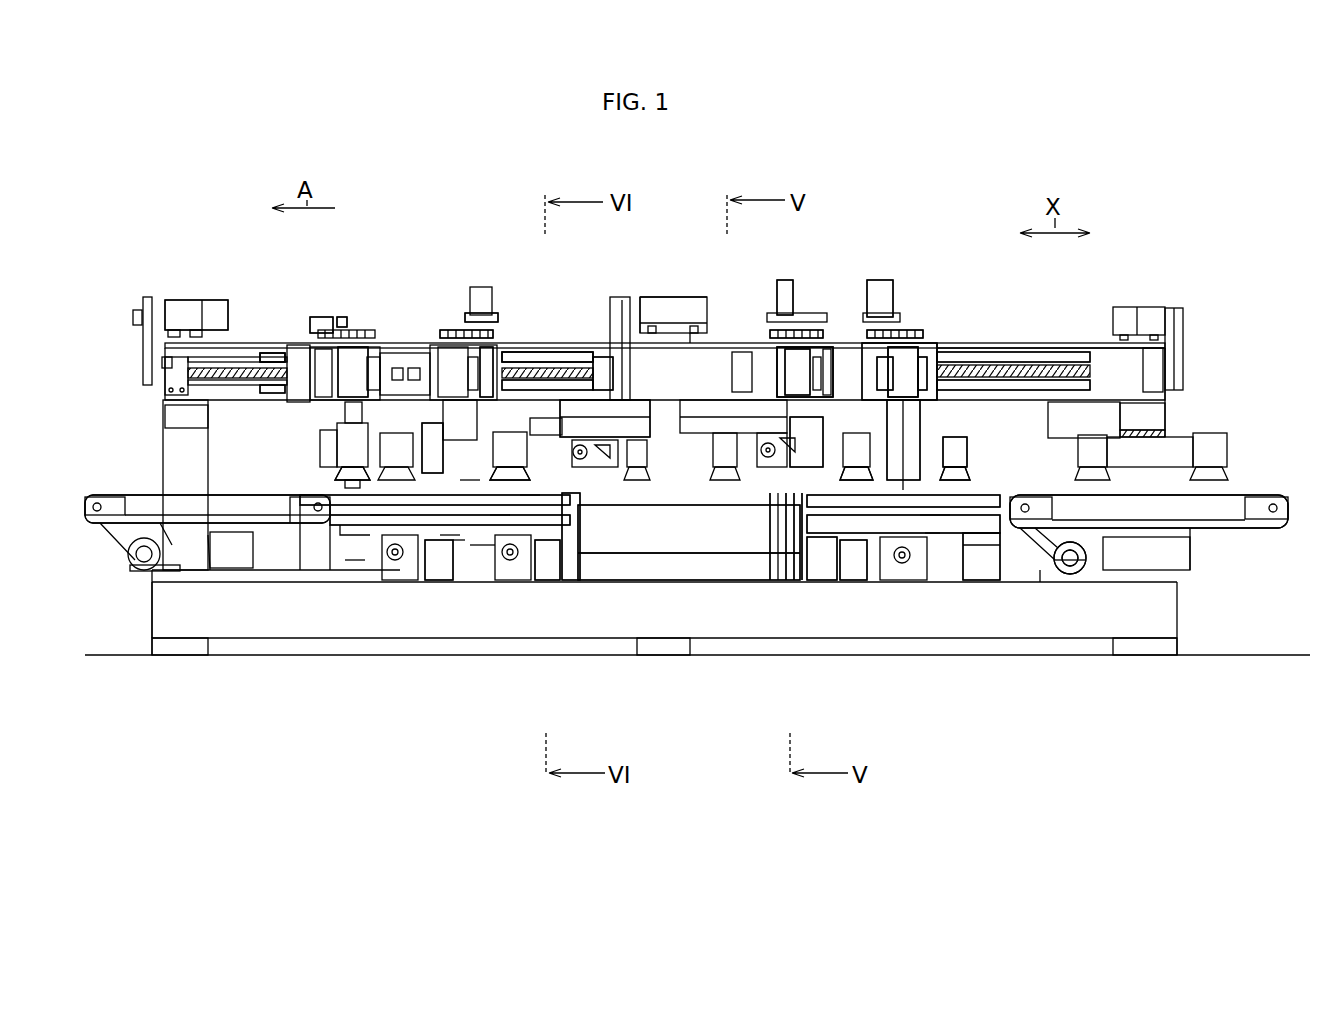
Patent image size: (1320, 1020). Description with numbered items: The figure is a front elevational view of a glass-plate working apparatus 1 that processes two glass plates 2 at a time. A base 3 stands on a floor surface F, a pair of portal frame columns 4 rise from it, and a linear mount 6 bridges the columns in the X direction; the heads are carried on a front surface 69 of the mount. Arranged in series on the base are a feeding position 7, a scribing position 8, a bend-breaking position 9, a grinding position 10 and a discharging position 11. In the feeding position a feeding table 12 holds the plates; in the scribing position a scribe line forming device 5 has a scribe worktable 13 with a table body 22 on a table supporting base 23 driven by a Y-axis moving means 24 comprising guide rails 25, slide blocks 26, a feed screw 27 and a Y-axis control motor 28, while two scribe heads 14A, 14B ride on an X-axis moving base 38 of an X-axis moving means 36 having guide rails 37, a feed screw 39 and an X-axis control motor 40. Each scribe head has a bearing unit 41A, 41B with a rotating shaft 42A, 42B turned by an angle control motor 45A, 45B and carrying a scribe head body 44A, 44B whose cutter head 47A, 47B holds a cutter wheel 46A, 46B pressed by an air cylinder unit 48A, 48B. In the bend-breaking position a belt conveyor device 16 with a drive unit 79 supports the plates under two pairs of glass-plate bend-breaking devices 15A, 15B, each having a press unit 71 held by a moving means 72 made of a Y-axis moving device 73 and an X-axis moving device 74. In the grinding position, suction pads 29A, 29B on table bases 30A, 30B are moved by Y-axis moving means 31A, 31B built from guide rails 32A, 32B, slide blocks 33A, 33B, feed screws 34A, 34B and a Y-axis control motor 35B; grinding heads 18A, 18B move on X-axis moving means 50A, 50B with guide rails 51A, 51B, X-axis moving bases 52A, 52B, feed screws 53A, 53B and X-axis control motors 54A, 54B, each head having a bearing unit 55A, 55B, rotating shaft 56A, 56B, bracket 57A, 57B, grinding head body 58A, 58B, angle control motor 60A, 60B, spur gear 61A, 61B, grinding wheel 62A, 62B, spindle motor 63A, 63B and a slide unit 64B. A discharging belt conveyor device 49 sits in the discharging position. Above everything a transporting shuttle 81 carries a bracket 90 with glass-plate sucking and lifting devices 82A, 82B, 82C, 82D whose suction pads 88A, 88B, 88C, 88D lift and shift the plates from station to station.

The glass-plate working apparatus 1 is at (1190, 350).
The glass plate 2 is at (355, 478).
The base 3 is at (188, 615).
The frame column 4 is at (1165, 417).
The scribe line forming device 5 is at (930, 530).
The mount 6 is at (1077, 355).
The feeding position 7 is at (1122, 497).
The scribing position 8 is at (900, 545).
The bend-breaking position 9 is at (600, 545).
The grinding position 10 is at (460, 535).
The discharging position 11 is at (225, 495).
The feeding table 12 is at (1200, 540).
The scribe worktable 13 is at (985, 560).
The scribe head 14A is at (900, 350).
The scribe head 14B is at (752, 352).
The glass-plate bend-breaking device 15A is at (660, 300).
The glass-plate bend-breaking device 15B is at (560, 352).
The belt conveyor device 16 is at (705, 560).
The grinding head 18A is at (455, 345).
The grinding head 18B is at (330, 345).
The table body 22 is at (980, 540).
The table supporting base 23 is at (1080, 560).
The Y-axis moving means 24 is at (1060, 560).
The guide rail 25 is at (820, 540).
The slide block 26 is at (860, 530).
The feed screw 27 is at (935, 520).
The Y-axis control motor 28 is at (950, 520).
The suction pad 29A is at (560, 530).
The suction pad 29B is at (353, 537).
The table base 30A is at (445, 540).
The table base 30B is at (345, 548).
The Y-axis moving means 31A is at (500, 520).
The Y-axis moving means 31B is at (365, 535).
The guide rail 32A is at (480, 545).
The guide rail 32B is at (320, 560).
The slide block 33A is at (430, 560).
The slide block 33B is at (245, 512).
The feed screw 34A is at (510, 560).
The feed screw 34B is at (395, 560).
The Y-axis control motor 35B is at (350, 560).
The X-axis moving means 36 is at (1060, 345).
The guide rail 37 is at (1083, 382).
The X-axis moving base 38 is at (858, 345).
The feed screw 39 is at (1030, 367).
The X-axis control motor 40 is at (1157, 322).
The bearing unit 41A is at (910, 360).
The bearing unit 41B is at (800, 350).
The rotating shaft 42A is at (905, 355).
The rotating shaft 42B is at (808, 350).
The scribe head body 44A is at (913, 338).
The scribe head body 44B is at (780, 334).
The angle control motor 45A is at (878, 282).
The angle control motor 45B is at (778, 300).
The cutter wheel 46A is at (925, 430).
The cutter wheel 46B is at (800, 560).
The cutter head 47A is at (945, 400).
The cutter head 47B is at (800, 347).
The air cylinder unit 48A is at (962, 348).
The air cylinder unit 48B is at (800, 440).
The discharging belt conveyor device 49 is at (230, 545).
The X-axis moving means 50A is at (555, 352).
The X-axis moving means 50B is at (280, 357).
The guide rail 51A is at (548, 380).
The guide rail 51B is at (277, 387).
The X-axis moving base 52A is at (497, 348).
The X-axis moving base 52B is at (293, 343).
The feed screw 53A is at (548, 368).
The feed screw 53B is at (243, 365).
The X-axis control motor 54A is at (645, 297).
The X-axis control motor 54B is at (190, 317).
The bearing unit 55A is at (445, 347).
The bearing unit 55B is at (355, 347).
The rotating shaft 56A is at (458, 405).
The rotating shaft 56B is at (345, 408).
The bracket 57A is at (485, 313).
The bracket 57B is at (347, 343).
The grinding head body 58A is at (378, 520).
The grinding head body 58B is at (337, 437).
The angle control motor 60A is at (489, 287).
The angle control motor 60B is at (325, 320).
The spur gear 61A is at (452, 340).
The spur gear 61B is at (346, 317).
The grinding wheel 62A is at (365, 505).
The grinding wheel 62B is at (355, 497).
The spindle motor 63A is at (470, 495).
The spindle motor 63B is at (347, 475).
The slide unit 64B is at (328, 453).
The front surface 69 is at (227, 393).
The press unit 71 is at (585, 500).
The moving means 72 is at (620, 330).
The Y-axis moving device 73 is at (575, 510).
The X-axis moving device 74 is at (598, 370).
The drive unit 79 is at (850, 560).
The transporting shuttle 81 is at (1183, 368).
The glass-plate sucking and lifting device 82A is at (1210, 452).
The glass-plate sucking and lifting device 82B is at (890, 440).
The glass-plate sucking and lifting device 82C is at (640, 430).
The glass-plate sucking and lifting device 82D is at (432, 425).
The suction pad 88A is at (1222, 480).
The suction pad 88B is at (962, 482).
The suction pad 88C is at (640, 480).
The suction pad 88D is at (360, 520).
The bracket 90 is at (1160, 452).
The floor surface F is at (1297, 635).